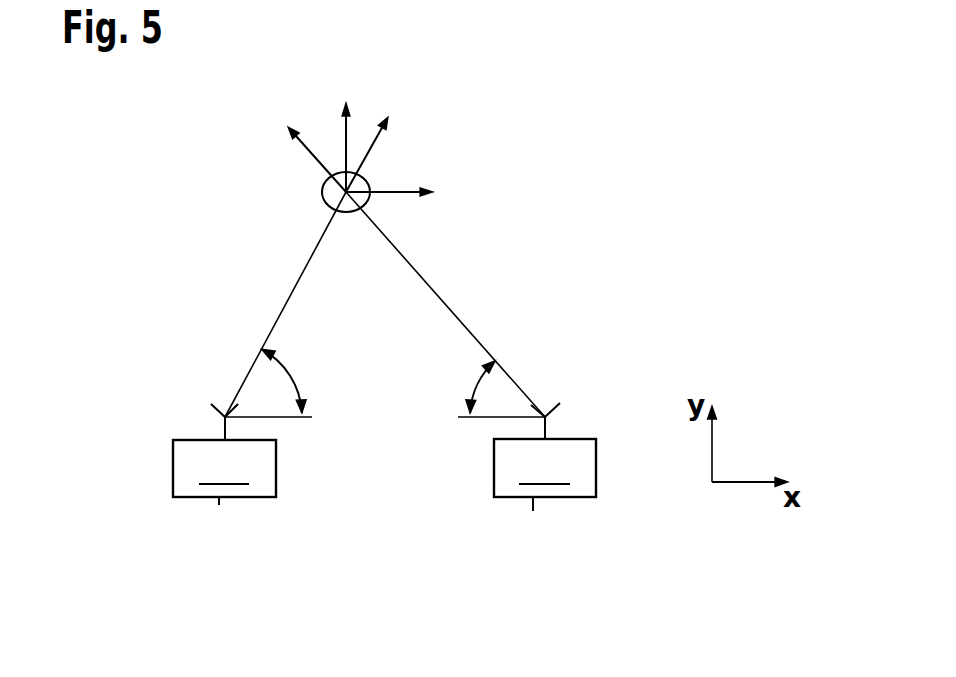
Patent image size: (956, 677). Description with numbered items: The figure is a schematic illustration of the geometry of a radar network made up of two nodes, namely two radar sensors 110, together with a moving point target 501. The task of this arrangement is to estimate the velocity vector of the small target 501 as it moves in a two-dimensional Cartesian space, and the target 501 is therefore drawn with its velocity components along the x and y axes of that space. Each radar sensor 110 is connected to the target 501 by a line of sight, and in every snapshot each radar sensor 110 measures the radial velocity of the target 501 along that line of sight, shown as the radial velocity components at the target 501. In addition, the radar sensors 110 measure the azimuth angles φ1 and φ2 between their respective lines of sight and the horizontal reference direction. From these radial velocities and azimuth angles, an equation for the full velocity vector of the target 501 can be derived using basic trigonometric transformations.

The point target 501 is at (322, 193).
The radar sensor 110 is at (393, 470).
The angle phi1 between line of sight of first radar sensor and x-axis 1 is at (293, 381).
The angle phi2 between line of sight of second radar sensor and x-axis 2 is at (467, 387).